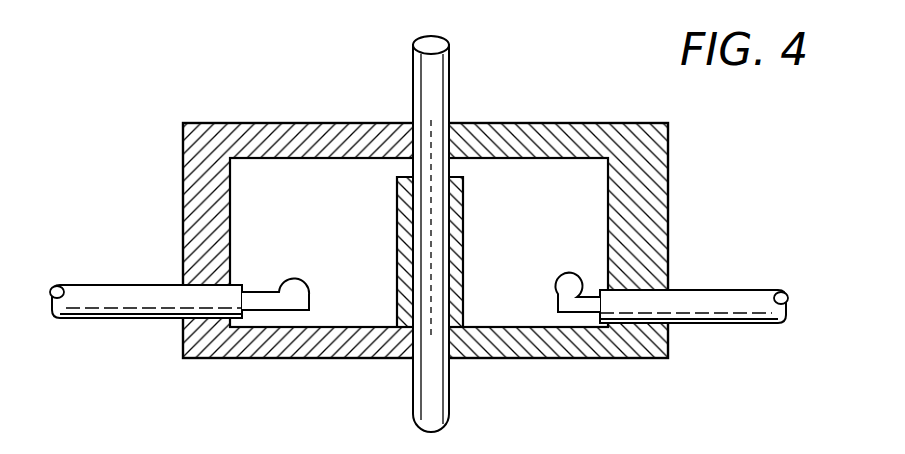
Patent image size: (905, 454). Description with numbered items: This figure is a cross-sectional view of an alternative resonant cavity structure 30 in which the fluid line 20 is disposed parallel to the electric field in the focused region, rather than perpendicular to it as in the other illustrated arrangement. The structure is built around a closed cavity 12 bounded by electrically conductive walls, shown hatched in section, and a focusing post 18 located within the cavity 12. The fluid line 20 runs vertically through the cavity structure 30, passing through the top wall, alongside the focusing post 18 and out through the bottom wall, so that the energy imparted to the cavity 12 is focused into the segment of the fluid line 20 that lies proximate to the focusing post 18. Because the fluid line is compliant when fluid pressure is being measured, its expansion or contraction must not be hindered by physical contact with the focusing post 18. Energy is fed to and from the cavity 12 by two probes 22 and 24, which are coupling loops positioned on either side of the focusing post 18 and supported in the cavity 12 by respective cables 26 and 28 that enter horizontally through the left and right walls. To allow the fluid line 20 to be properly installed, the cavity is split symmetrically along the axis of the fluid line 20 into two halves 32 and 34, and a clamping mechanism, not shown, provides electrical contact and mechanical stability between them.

The resonant cavity structure 30 is at (152, 111).
The cavity 12 is at (252, 183).
The focusing post 18 is at (463, 206).
The fluid line 20 is at (451, 92).
The probe 22 is at (293, 274).
The probe 24 is at (567, 275).
The cable 26 is at (122, 285).
The cable 28 is at (718, 290).
The cavity half 32 is at (250, 343).
The cavity half 34 is at (600, 343).